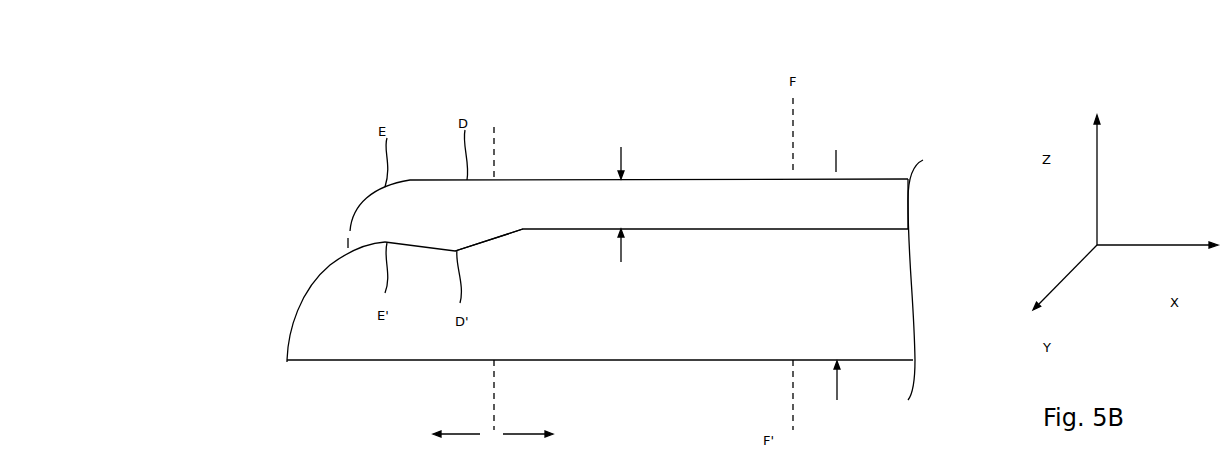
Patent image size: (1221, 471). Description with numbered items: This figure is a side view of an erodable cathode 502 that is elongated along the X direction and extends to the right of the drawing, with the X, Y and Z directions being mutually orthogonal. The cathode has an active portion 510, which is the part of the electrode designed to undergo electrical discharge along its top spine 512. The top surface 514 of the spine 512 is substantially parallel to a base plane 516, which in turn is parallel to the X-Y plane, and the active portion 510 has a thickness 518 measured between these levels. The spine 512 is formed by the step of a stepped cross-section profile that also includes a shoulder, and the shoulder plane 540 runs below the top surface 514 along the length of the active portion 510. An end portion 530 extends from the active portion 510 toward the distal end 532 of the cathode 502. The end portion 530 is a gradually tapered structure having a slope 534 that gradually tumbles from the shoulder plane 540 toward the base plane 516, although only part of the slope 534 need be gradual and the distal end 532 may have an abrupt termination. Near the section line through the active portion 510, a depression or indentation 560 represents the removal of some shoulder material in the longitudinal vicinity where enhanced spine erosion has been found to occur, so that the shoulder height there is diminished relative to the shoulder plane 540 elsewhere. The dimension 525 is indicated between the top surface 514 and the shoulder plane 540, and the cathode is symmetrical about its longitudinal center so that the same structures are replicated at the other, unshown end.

The cathode 502 is at (902, 76).
The active portion 510 is at (545, 435).
The spine 512 is at (878, 205).
The top surface 514 is at (758, 180).
The base plane 516 is at (672, 360).
The thickness 518 is at (835, 156).
The thickness of active material layer 525 is at (723, 264).
The end portion 530 is at (456, 449).
The distal end 532 is at (287, 360).
The slope 534 is at (309, 288).
The shoulder plane 540 is at (673, 203).
The depressions or indentations 560 is at (450, 249).